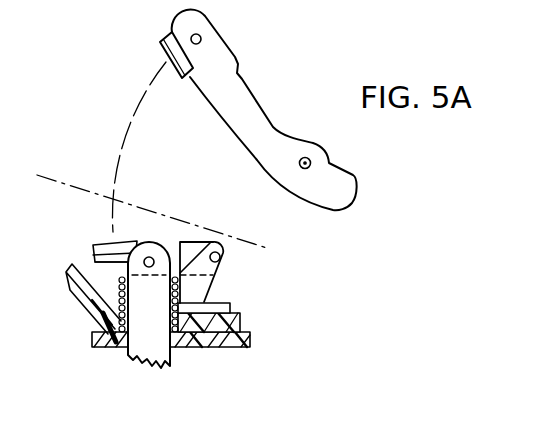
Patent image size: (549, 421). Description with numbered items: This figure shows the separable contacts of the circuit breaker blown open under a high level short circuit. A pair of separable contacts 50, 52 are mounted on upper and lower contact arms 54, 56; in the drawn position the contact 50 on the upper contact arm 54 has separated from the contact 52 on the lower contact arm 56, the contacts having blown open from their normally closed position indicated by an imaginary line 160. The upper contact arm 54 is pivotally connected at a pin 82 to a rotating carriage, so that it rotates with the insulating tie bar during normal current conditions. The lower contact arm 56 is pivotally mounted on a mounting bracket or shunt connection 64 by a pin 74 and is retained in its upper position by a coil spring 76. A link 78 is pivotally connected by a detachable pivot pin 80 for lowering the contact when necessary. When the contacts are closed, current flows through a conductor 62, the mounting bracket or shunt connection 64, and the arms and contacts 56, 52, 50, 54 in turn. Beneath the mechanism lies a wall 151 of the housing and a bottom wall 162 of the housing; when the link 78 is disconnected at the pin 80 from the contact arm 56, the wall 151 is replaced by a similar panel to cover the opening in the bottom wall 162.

The separable contact 50 is at (165, 50).
The upper contact arm 54 is at (238, 97).
The pin 82 is at (305, 169).
The imaginary line 160 is at (82, 191).
The separable contact 52 is at (103, 245).
The detachable pivot pin 80 is at (95, 263).
The lower contact arm 56 is at (182, 253).
The pin 74 is at (220, 257).
The mounting bracket or shunt connection 64 is at (196, 298).
The bottom wall 162 is at (229, 322).
The wall 151 is at (196, 346).
The coil spring 76 is at (117, 340).
The link 78 is at (160, 318).
The conductor 62 is at (107, 296).